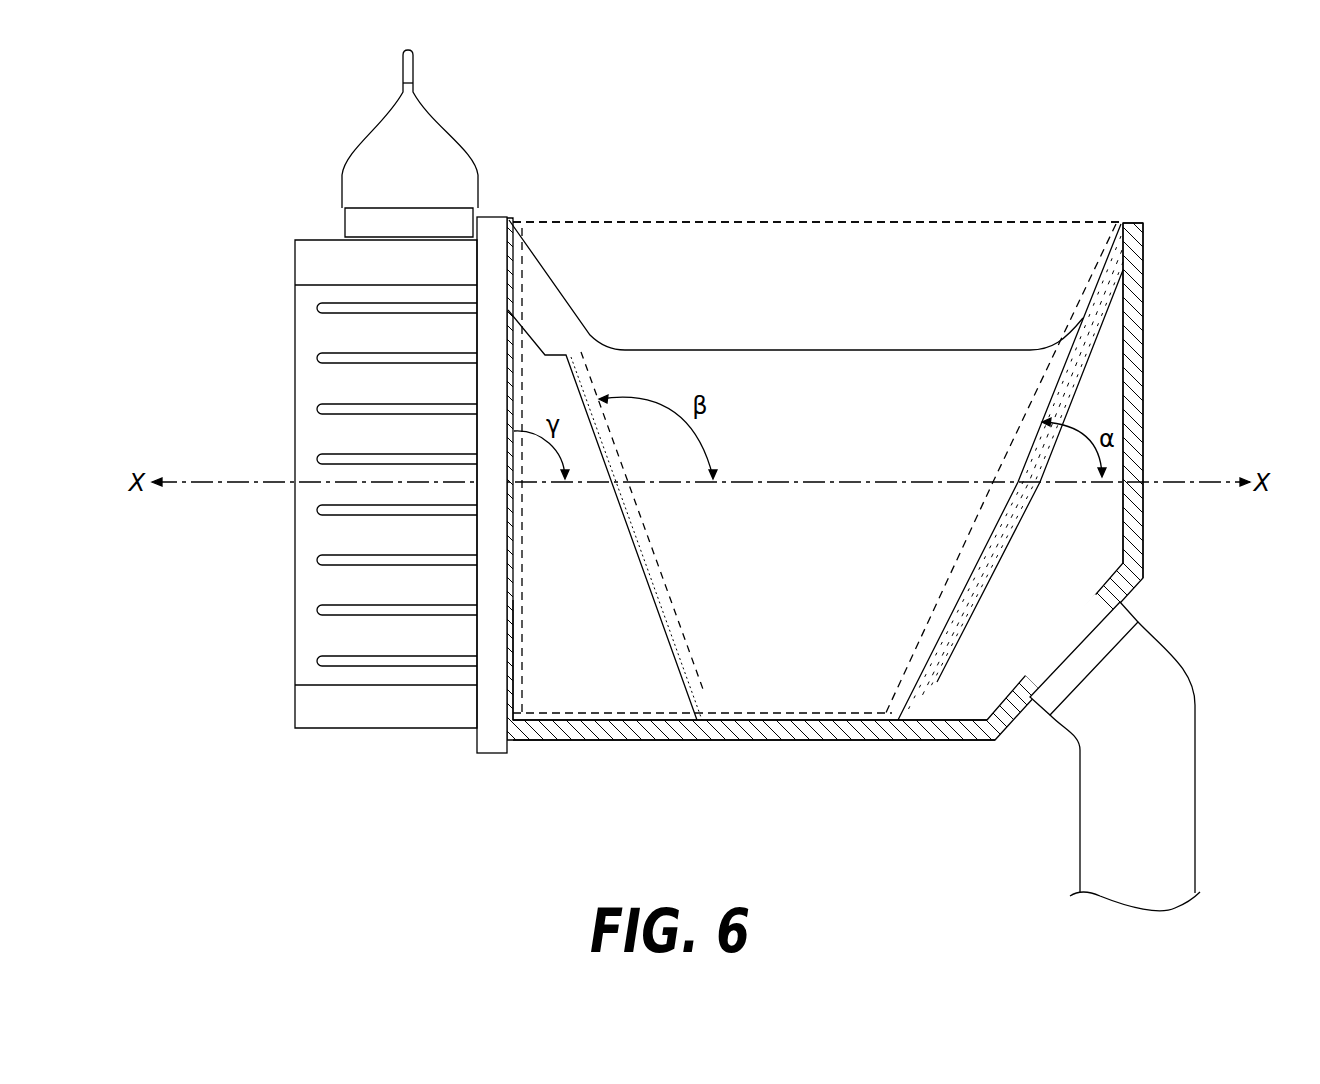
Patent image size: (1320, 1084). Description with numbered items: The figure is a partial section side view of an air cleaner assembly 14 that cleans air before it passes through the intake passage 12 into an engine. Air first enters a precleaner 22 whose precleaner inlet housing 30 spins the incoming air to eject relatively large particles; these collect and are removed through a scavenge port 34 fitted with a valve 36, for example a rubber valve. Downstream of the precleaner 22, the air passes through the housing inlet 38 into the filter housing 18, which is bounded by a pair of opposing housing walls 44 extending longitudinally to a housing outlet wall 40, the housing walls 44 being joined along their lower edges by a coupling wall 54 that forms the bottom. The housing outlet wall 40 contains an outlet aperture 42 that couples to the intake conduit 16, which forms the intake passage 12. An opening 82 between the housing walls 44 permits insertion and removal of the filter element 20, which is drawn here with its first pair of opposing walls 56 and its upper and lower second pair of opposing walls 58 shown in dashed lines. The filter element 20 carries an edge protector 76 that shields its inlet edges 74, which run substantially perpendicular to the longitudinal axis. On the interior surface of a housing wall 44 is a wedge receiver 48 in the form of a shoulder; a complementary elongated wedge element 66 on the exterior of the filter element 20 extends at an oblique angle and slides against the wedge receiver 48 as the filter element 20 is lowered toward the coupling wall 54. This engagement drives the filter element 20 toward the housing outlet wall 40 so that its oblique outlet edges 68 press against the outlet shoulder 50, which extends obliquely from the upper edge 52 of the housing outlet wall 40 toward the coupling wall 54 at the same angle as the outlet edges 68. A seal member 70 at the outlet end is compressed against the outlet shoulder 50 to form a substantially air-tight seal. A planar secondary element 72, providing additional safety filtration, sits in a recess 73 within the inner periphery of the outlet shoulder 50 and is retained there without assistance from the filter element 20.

The intake passage 12 is at (1032, 853).
The air cleaner assembly 14 is at (766, 180).
The intake conduit 16 is at (1183, 832).
The filter housing 18 is at (797, 741).
The filter element 20 is at (1026, 261).
The precleaner 22 is at (379, 276).
The precleaner inlet housing 30 is at (377, 643).
The scavenge port 34 is at (350, 212).
The valve 36 is at (416, 118).
The housing inlet 38 is at (529, 628).
The housing outlet wall 40 is at (1143, 420).
The outlet aperture 42 is at (1077, 633).
The housing walls 44 is at (879, 362).
The wedge receiver 48 is at (623, 512).
The outlet shoulder 50 is at (925, 656).
The upper edge 52 is at (1133, 222).
The coupling wall 54 is at (693, 741).
The first pair of opposing walls 56 is at (633, 237).
The second pair of opposing walls 58 is at (888, 222).
The wedge element 66 is at (603, 420).
The outlet edges 68 is at (965, 543).
The seal member 70 is at (1030, 415).
The secondary element 72 is at (1098, 328).
The recess 73 is at (1093, 360).
The inlet edges 74 is at (526, 578).
The edge protector 76 is at (516, 254).
The opening 82 is at (739, 337).